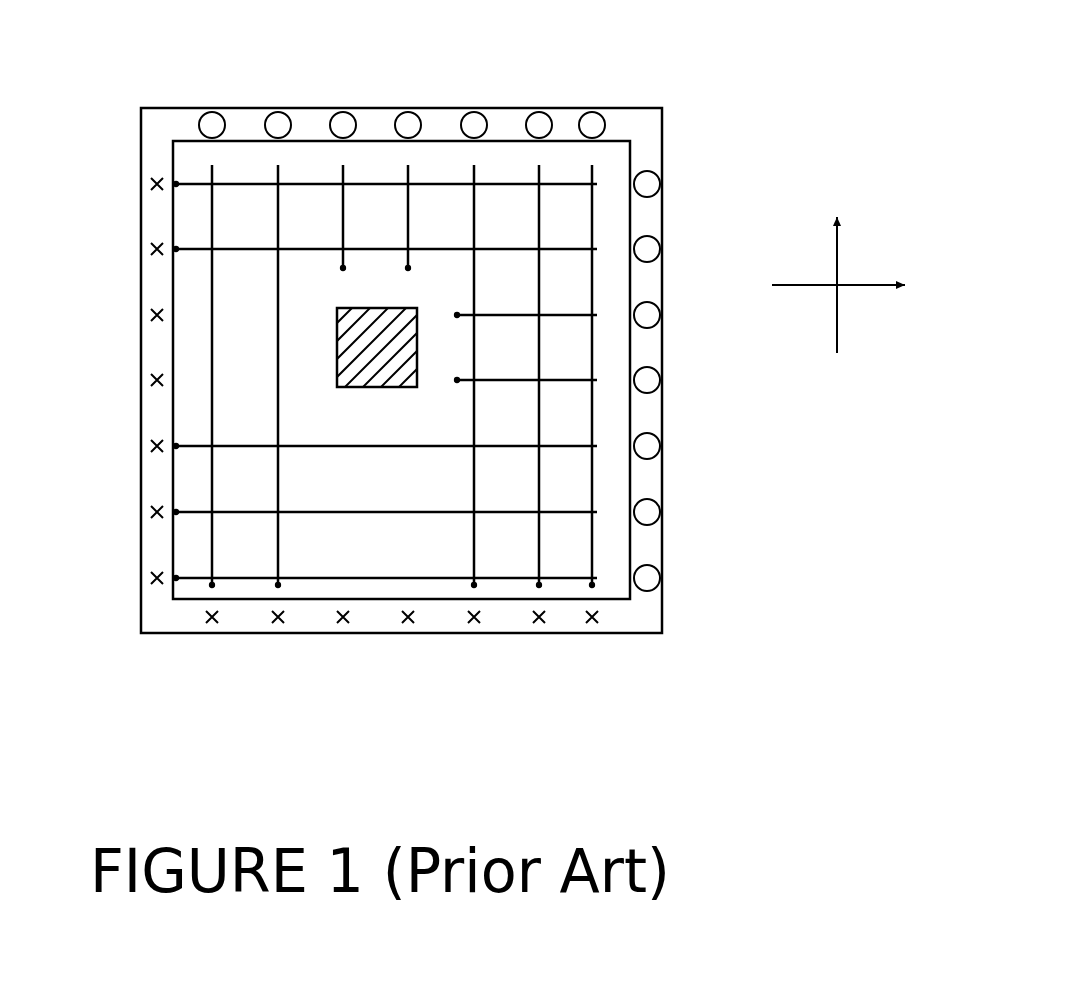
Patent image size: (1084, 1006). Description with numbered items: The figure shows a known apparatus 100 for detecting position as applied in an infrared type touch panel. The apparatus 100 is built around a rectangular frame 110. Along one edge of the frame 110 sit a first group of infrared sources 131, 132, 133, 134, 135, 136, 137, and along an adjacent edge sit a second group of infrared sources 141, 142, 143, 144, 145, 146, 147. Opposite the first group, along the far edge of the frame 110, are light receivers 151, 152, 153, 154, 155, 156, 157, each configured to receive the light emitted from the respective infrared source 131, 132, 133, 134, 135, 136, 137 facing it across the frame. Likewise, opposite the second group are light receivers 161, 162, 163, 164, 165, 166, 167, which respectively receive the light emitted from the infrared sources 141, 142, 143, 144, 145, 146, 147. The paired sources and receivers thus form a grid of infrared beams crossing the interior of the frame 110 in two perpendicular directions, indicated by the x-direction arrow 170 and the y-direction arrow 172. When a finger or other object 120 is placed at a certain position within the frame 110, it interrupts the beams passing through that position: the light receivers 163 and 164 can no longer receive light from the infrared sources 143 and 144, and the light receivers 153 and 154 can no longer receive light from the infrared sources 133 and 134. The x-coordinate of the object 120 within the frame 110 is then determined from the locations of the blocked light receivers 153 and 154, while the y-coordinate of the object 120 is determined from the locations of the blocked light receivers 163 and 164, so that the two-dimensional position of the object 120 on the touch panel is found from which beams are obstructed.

The apparatus for detecting position 100 is at (114, 712).
The rectangular frame 110 is at (643, 130).
The object 120 is at (358, 387).
The infrared source 131 is at (212, 326).
The infrared source 132 is at (278, 326).
The infrared source 133 is at (341, 167).
The infrared source 134 is at (410, 167).
The infrared source 135 is at (475, 326).
The infrared source 136 is at (540, 326).
The infrared source 137 is at (603, 326).
The infrared source 141 is at (682, 186).
The infrared source 142 is at (682, 251).
The infrared source 143 is at (682, 317).
The infrared source 144 is at (682, 382).
The infrared source 145 is at (682, 448).
The infrared source 146 is at (682, 514).
The infrared source 147 is at (682, 580).
The light receiver 151 is at (212, 643).
The light receiver 152 is at (278, 643).
The light receiver 153 is at (341, 643).
The light receiver 154 is at (410, 643).
The light receiver 155 is at (475, 643).
The light receiver 156 is at (540, 643).
The light receiver 157 is at (603, 643).
The light receiver 161 is at (339, 186).
The light receiver 162 is at (339, 251).
The light receiver 163 is at (339, 317).
The light receiver 164 is at (339, 382).
The light receiver 165 is at (339, 448).
The light receiver 166 is at (339, 514).
The light receiver 167 is at (339, 580).
The x-axis direction 170 is at (867, 287).
The y-axis direction 172 is at (838, 268).